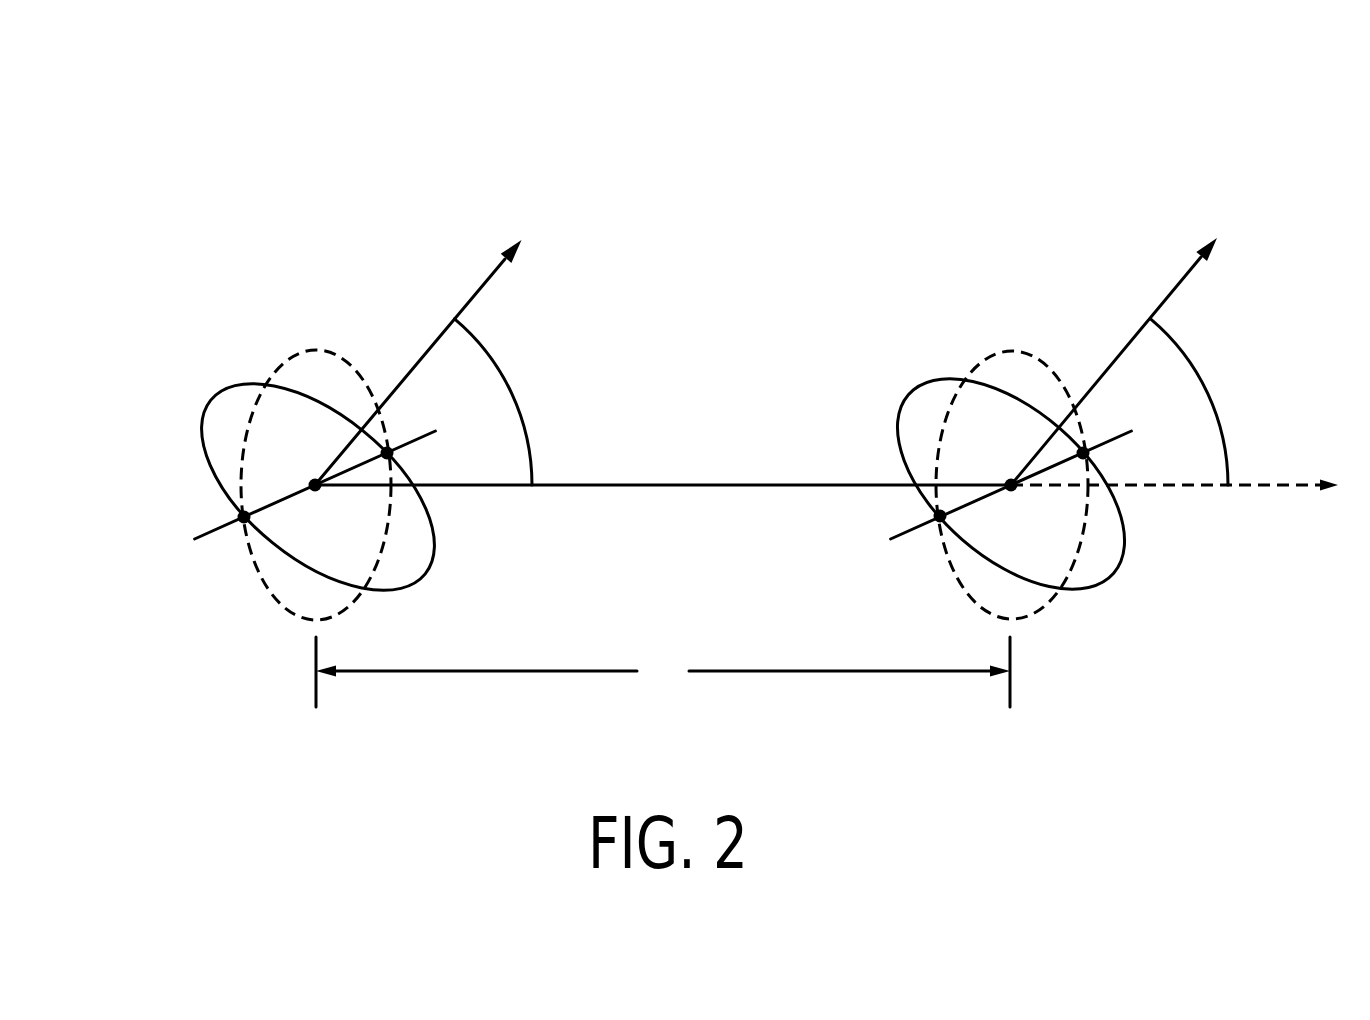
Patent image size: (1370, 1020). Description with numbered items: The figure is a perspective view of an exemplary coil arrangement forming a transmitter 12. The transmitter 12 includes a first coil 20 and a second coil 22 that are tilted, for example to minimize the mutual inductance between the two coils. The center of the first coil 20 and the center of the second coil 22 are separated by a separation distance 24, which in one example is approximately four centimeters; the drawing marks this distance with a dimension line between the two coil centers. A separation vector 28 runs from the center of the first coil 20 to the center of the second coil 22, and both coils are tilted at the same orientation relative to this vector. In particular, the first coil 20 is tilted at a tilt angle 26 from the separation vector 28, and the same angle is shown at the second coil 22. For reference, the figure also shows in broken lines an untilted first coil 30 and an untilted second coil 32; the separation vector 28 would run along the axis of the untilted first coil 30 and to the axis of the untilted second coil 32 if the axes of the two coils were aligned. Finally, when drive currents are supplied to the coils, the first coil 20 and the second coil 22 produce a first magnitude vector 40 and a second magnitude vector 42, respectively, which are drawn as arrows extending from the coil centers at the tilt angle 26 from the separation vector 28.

The transmitter 12 is at (899, 110).
The first coil 20 is at (225, 393).
The second coil 22 is at (924, 395).
The separation distance 24 is at (663, 672).
The tilt angle 26 is at (512, 388).
The separation vector 28 is at (772, 482).
The untilted first coil 30 is at (310, 351).
The untilted second coil 32 is at (1008, 351).
The first magnitude vector 40 is at (482, 283).
The second magnitude vector 42 is at (1180, 280).